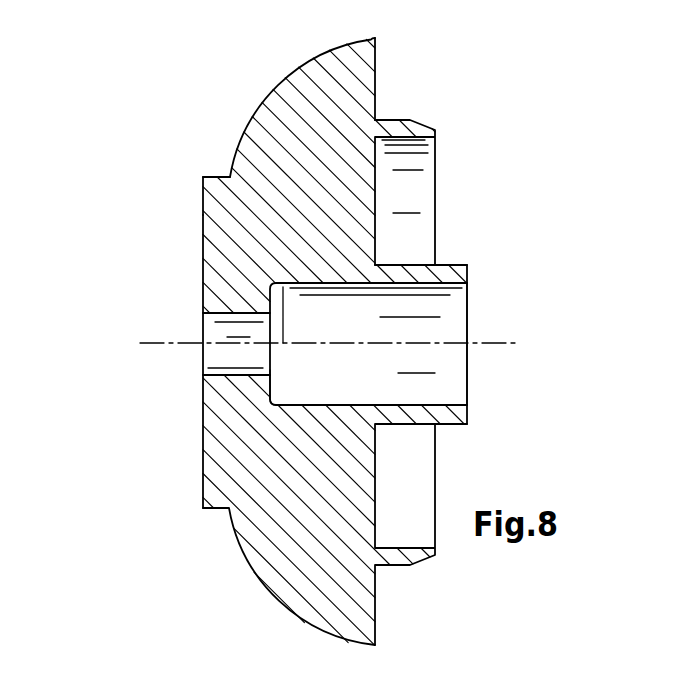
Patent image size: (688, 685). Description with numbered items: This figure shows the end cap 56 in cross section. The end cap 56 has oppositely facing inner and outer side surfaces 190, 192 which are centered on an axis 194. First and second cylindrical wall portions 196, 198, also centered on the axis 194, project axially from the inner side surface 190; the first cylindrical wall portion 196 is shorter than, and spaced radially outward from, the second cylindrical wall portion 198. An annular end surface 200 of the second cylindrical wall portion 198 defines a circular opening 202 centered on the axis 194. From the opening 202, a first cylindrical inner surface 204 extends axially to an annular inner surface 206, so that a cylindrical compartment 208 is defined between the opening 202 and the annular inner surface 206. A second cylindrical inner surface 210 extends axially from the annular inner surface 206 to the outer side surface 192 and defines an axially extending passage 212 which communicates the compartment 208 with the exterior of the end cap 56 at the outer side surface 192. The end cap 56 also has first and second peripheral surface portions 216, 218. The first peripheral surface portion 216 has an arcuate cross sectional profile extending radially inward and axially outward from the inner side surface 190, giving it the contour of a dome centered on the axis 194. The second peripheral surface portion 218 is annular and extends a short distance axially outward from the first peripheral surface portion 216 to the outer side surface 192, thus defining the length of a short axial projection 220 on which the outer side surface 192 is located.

The end cap 56 is at (138, 115).
The inner side surface 190 is at (376, 73).
The outer side surface 192 is at (203, 237).
The axis 194 is at (162, 342).
The first cylindrical wall portion 196 is at (398, 120).
The second cylindrical wall portion 198 is at (457, 266).
The annular end surface 200 is at (470, 274).
The circular opening 202 is at (488, 312).
The first cylindrical inner surface 204 is at (443, 406).
The annular inner surface 206 is at (272, 390).
The cylindrical compartment 208 is at (365, 329).
The second cylindrical inner surface 210 is at (227, 375).
The axially extending passage 212 is at (204, 318).
The first peripheral surface portion 216 is at (263, 102).
The second peripheral surface portion 218 is at (218, 176).
The short axial projection 220 is at (213, 195).